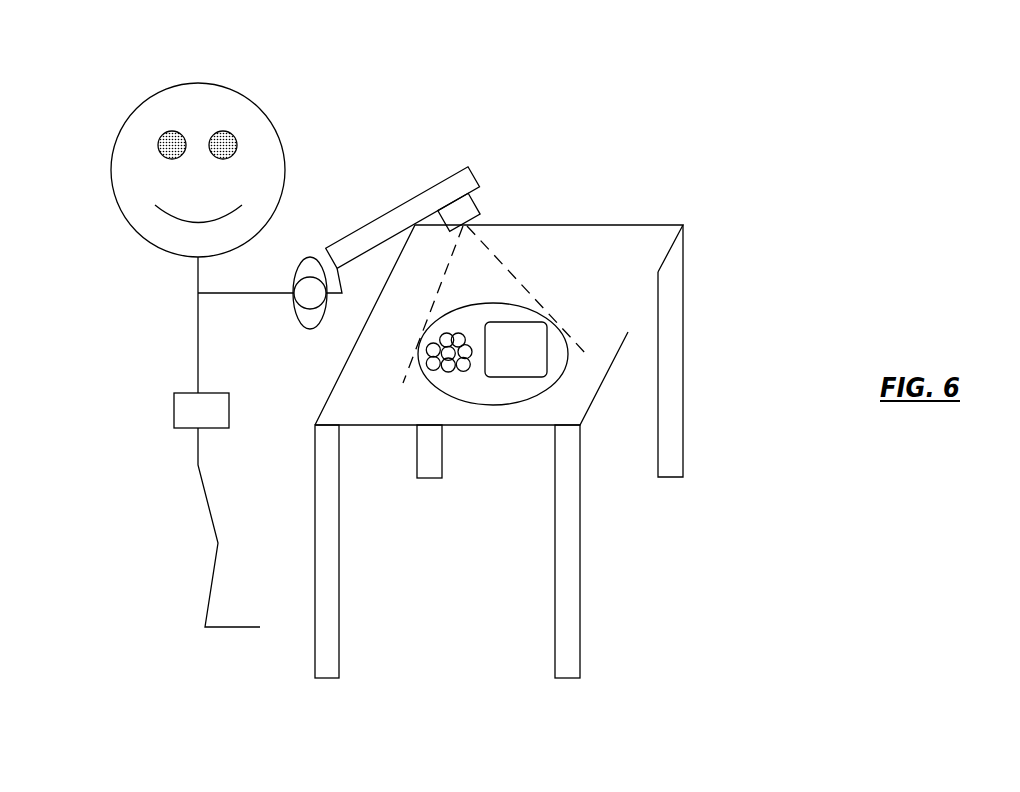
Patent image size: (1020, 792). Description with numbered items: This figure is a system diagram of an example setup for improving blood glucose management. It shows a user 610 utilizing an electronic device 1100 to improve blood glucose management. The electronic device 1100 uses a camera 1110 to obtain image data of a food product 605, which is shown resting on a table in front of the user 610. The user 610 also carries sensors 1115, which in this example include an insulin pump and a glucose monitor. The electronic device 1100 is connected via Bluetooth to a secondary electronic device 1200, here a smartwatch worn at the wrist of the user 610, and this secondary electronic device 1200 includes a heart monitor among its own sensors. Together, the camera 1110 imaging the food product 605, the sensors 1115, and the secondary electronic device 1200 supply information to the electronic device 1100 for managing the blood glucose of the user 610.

The user 610 is at (163, 87).
The electronic device 1100 is at (477, 172).
The camera 1110 is at (476, 208).
The secondary electronic device 1200 is at (293, 306).
The sensors 1115 is at (175, 410).
The food product 605 is at (563, 333).